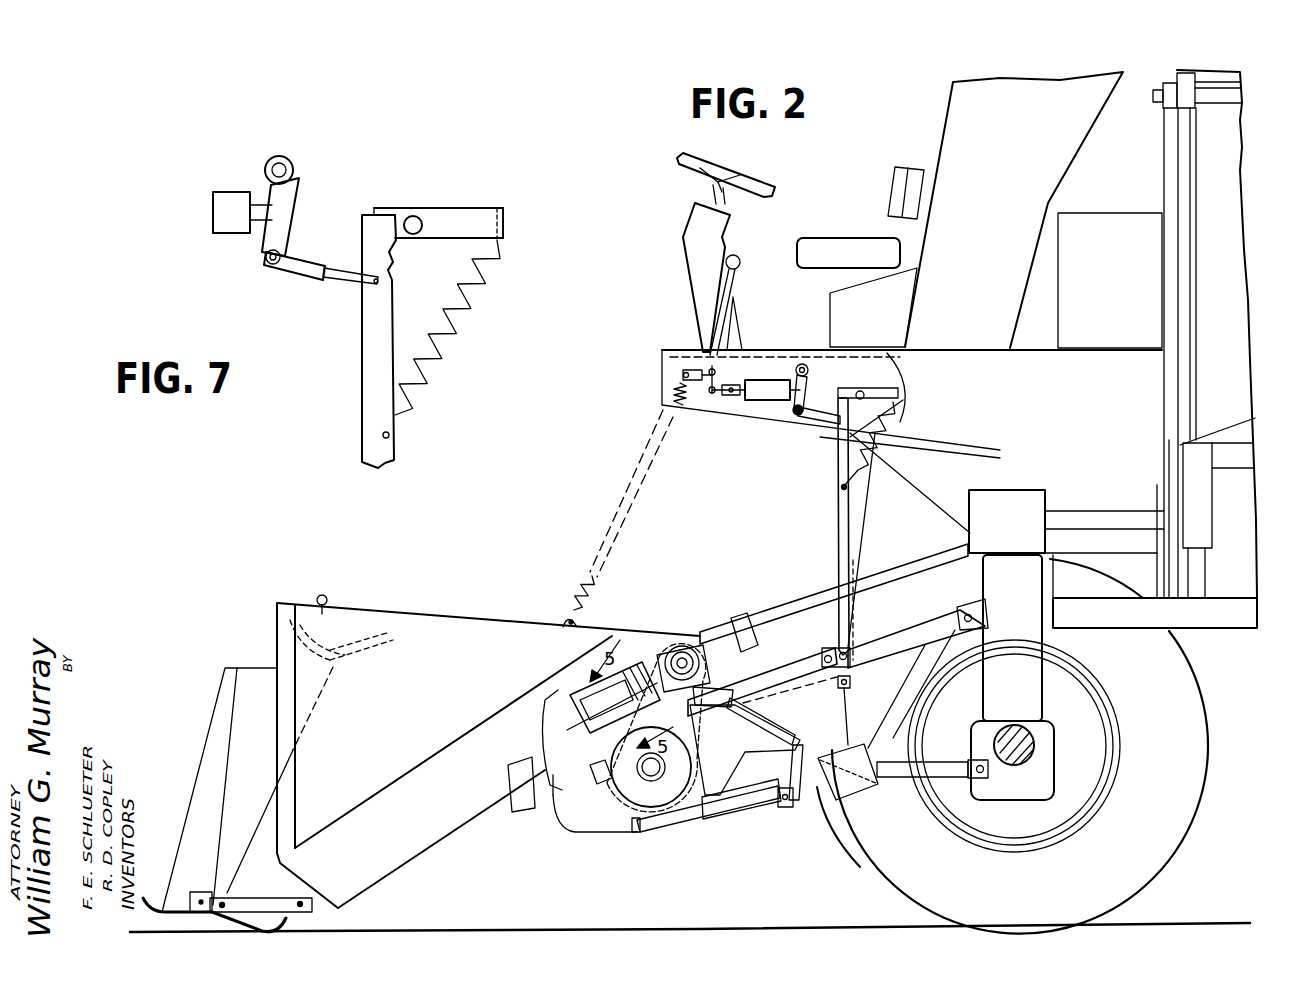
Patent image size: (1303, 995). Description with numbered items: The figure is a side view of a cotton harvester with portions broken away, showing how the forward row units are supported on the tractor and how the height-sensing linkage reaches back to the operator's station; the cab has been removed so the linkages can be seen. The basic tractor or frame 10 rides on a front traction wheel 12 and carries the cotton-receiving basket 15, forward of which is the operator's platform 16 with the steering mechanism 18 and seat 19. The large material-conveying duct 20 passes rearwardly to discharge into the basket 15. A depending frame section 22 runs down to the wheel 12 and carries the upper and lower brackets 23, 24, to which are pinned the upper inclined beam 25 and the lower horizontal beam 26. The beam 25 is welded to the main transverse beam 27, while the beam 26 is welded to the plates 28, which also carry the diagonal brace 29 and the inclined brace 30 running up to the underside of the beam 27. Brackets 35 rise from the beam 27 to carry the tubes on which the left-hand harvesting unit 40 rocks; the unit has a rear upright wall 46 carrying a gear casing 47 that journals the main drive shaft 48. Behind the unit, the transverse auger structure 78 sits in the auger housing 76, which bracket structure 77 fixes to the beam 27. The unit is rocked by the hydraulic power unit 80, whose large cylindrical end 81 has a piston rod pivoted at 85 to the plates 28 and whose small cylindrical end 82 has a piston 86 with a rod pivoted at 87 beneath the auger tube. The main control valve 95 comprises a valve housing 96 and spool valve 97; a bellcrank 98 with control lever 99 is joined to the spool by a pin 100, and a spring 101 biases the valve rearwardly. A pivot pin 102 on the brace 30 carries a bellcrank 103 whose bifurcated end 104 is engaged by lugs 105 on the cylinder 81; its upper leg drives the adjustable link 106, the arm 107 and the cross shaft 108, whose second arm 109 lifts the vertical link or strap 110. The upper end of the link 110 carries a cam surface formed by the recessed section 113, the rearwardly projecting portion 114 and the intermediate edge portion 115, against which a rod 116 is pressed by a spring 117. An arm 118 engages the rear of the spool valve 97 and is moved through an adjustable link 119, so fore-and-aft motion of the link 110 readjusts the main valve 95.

In FIG. 2, the tractor or frame 10 is at (1234, 634).
In FIG. 2, the front traction wheel 12 is at (1184, 834).
In FIG. 2, the cotton-receiving basket 15 is at (1228, 150).
In FIG. 2, the operator's platform 16 is at (1097, 358).
In FIG. 2, the steering mechanism 18 is at (746, 182).
In FIG. 2, the seat 19 is at (838, 245).
In FIG. 2, the material-conveying duct 20 is at (957, 122).
In FIG. 2, the depending frame section 22 is at (1035, 667).
In FIG. 2, the upper forwardly projecting bracket 23 is at (990, 610).
In FIG. 2, the lower forwardly projecting bracket 24 is at (968, 756).
In FIG. 2, the upper inclined beam 25 is at (893, 634).
In FIG. 2, the lower horizontal beam 26 is at (922, 780).
In FIG. 2, the main transverse beam 27 is at (712, 708).
In FIG. 2, the plates 28 is at (872, 760).
In FIG. 2, the diagonal brace 29 is at (932, 662).
In FIG. 2, the inclined brace 30 is at (762, 698).
In FIG. 2, the brackets 35 is at (740, 636).
In FIG. 2, the left-hand harvesting unit 40 is at (473, 609).
In FIG. 2, the rear upright wall 46 is at (600, 700).
In FIG. 2, the gear casing 47 is at (682, 645).
In FIG. 2, the main drive shaft 48 is at (677, 645).
In FIG. 2, the auger trough or housing 76 is at (698, 774).
In FIG. 2, the bracket structure 77 is at (718, 684).
In FIG. 2, the transverse auger structure 78 is at (625, 779).
In FIG. 2, the hydraulic power unit 80 is at (762, 782).
In FIG. 2, the large cylindrical end 81 is at (817, 805).
In FIG. 2, the small cylindrical end 82 is at (745, 808).
In FIG. 2, the pivotal connection 85 is at (852, 792).
In FIG. 2, the piston 86 is at (682, 823).
In FIG. 2, the pivotal connection 87 is at (637, 828).
In FIG. 7, the main control valve 95 is at (214, 246).
In FIG. 2, the main control valve 95 is at (764, 410).
In FIG. 7, the valve housing 96 is at (231, 195).
In FIG. 2, the valve housing 96 is at (781, 403).
In FIG. 2, the spool valve 97 is at (770, 352).
In FIG. 2, the bellcrank 98 is at (741, 347).
In FIG. 2, the control lever 99 is at (728, 291).
In FIG. 2, the pin 100 is at (713, 397).
In FIG. 2, the spring 101 is at (682, 408).
In FIG. 2, the pivot pin 102 is at (748, 722).
In FIG. 2, the bellcrank 103 is at (846, 712).
In FIG. 2, the bifurcated end 104 is at (798, 810).
In FIG. 2, the lugs 105 is at (779, 810).
In FIG. 2, the adjustable link 106 is at (851, 681).
In FIG. 2, the arm 107 is at (838, 650).
In FIG. 2, the cross shaft 108 is at (827, 654).
In FIG. 2, the second arm 109 is at (820, 688).
In FIG. 7, the vertical link or strap 110 is at (372, 383).
In FIG. 2, the vertical link or strap 110 is at (838, 497).
In FIG. 7, the recessed section 113 is at (394, 272).
In FIG. 7, the rearwardly projecting portion 114 is at (425, 235).
In FIG. 7, the intermediate edge portion 115 is at (398, 250).
In FIG. 7, the rod 116 is at (414, 215).
In FIG. 2, the rod 116 is at (862, 391).
In FIG. 7, the spring 117 is at (445, 368).
In FIG. 2, the spring 117 is at (900, 408).
In FIG. 7, the arm 118 is at (290, 197).
In FIG. 2, the arm 118 is at (808, 392).
In FIG. 7, the adjustable link 119 is at (304, 278).
In FIG. 2, the adjustable link 119 is at (814, 424).